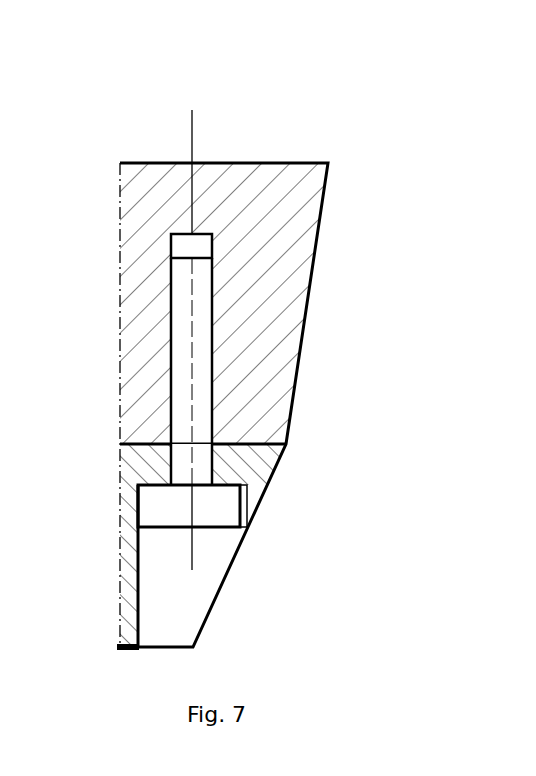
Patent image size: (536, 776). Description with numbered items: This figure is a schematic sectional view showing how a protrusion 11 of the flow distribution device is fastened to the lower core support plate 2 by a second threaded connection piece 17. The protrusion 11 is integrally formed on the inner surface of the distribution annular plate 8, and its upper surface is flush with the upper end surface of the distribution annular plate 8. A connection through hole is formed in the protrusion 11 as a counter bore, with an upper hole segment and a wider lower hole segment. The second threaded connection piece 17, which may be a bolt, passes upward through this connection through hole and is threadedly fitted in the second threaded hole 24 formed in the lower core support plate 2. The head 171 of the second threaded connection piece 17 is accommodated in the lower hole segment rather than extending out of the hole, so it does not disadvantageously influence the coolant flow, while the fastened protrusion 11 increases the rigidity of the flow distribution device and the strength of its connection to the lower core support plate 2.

The lower core support plate 2 is at (218, 190).
The distribution annular plate 8 is at (127, 593).
The protrusion 11 is at (237, 463).
The second threaded connection piece 17 is at (197, 372).
The second threaded hole 24 is at (196, 247).
The head of second threaded connection piece 171 is at (220, 509).